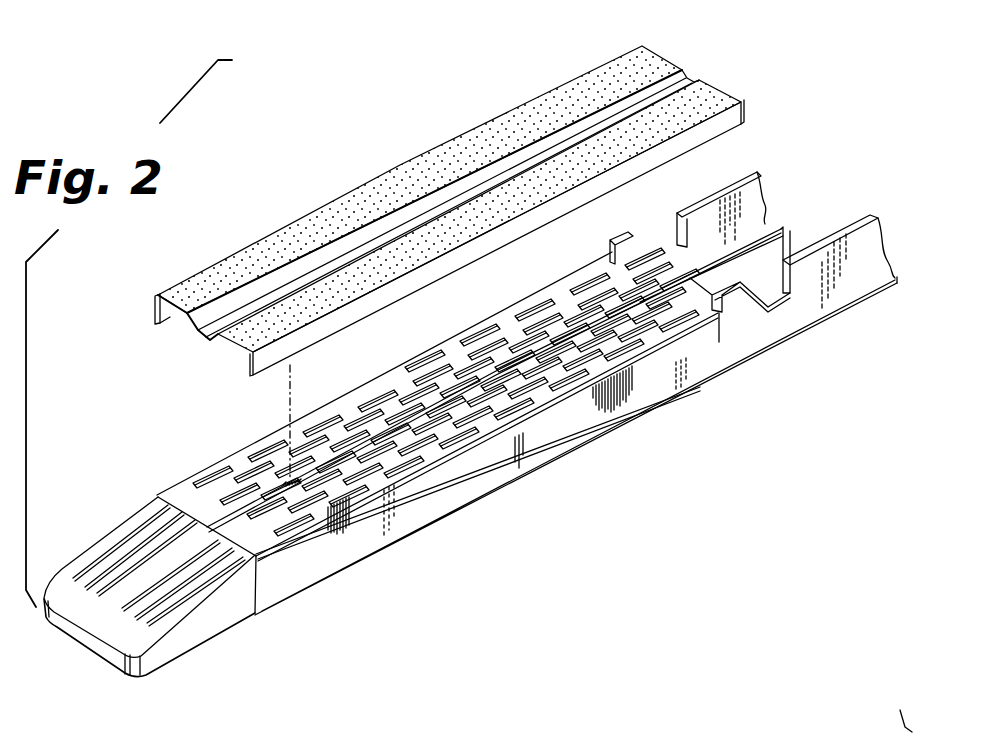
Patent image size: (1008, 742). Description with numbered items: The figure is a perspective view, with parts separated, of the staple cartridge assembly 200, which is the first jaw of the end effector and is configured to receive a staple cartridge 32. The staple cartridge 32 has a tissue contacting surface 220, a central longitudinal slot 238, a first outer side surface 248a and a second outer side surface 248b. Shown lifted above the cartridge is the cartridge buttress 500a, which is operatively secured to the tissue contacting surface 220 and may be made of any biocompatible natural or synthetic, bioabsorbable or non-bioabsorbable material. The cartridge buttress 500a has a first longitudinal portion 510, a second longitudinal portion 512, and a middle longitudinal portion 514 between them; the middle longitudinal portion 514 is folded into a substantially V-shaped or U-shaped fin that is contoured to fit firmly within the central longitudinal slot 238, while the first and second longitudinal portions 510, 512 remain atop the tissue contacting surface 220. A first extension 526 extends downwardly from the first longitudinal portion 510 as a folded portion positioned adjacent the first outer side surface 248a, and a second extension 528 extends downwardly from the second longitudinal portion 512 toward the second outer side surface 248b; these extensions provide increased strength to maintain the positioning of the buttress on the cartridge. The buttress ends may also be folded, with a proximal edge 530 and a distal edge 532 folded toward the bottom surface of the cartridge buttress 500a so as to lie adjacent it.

The staple cartridge assembly 200 is at (470, 424).
The staple cartridge 32 is at (198, 632).
The tissue contacting surface 220 is at (473, 395).
The central longitudinal slot 238 is at (663, 280).
The first outer side surface 248a is at (455, 488).
The second outer side surface 248b is at (258, 442).
The cartridge buttress 500a is at (452, 197).
The first longitudinal portion 510 is at (720, 100).
The second longitudinal portion 512 is at (653, 57).
The middle longitudinal portion 514 is at (685, 76).
The first extension 526 is at (322, 330).
The second extension 528 is at (153, 321).
The proximal edge 530 is at (745, 106).
The distal edge 532 is at (158, 292).